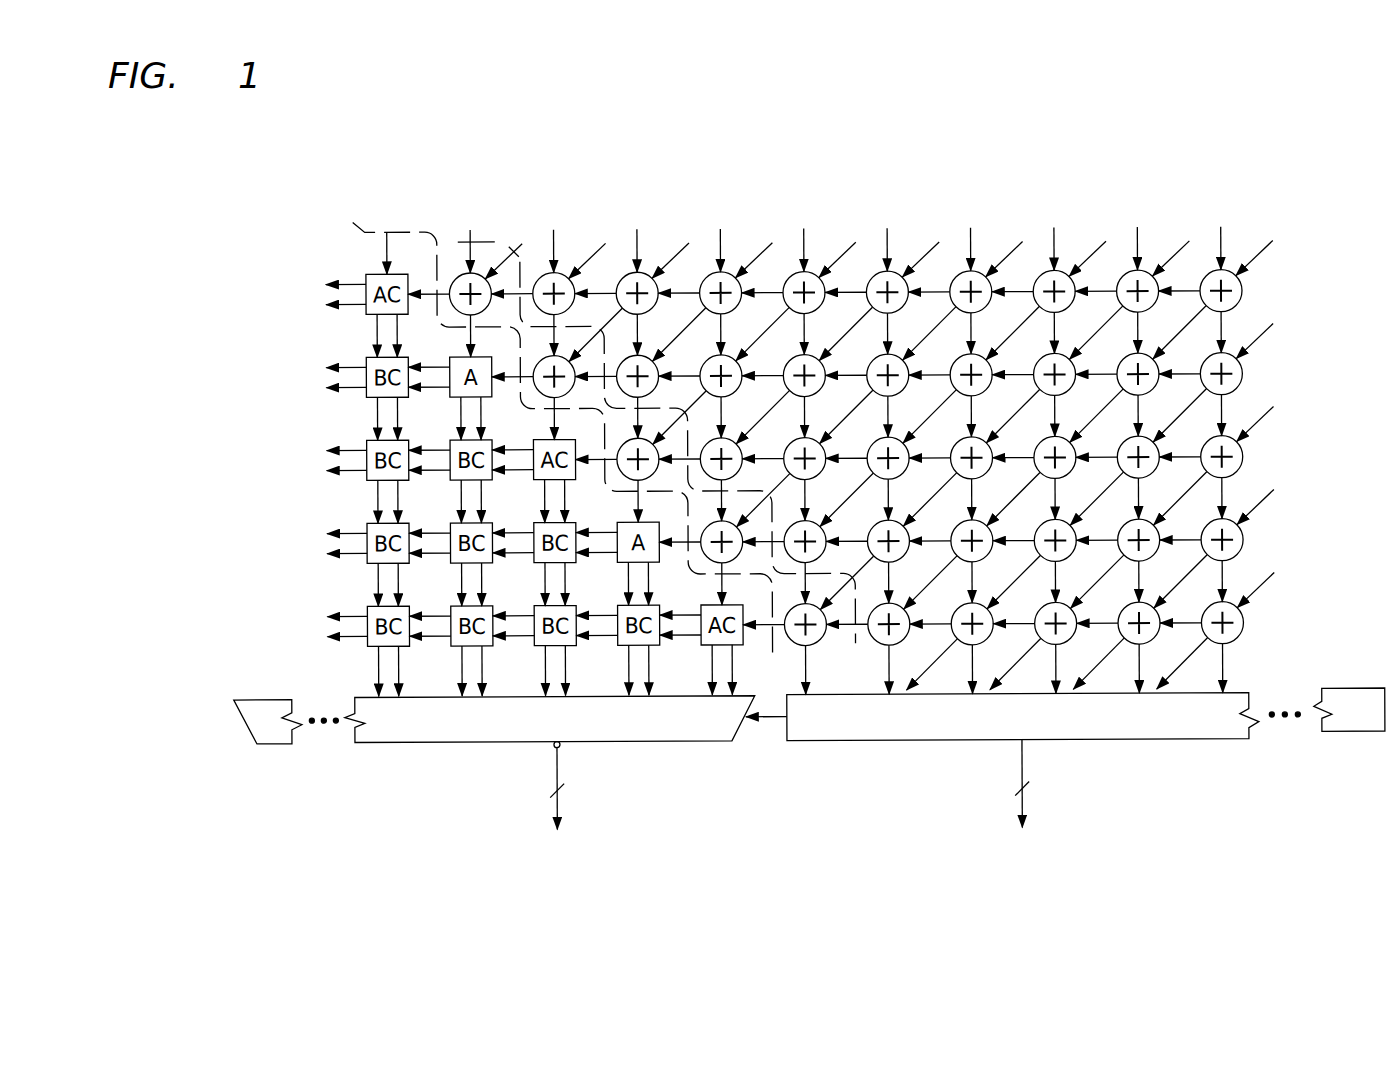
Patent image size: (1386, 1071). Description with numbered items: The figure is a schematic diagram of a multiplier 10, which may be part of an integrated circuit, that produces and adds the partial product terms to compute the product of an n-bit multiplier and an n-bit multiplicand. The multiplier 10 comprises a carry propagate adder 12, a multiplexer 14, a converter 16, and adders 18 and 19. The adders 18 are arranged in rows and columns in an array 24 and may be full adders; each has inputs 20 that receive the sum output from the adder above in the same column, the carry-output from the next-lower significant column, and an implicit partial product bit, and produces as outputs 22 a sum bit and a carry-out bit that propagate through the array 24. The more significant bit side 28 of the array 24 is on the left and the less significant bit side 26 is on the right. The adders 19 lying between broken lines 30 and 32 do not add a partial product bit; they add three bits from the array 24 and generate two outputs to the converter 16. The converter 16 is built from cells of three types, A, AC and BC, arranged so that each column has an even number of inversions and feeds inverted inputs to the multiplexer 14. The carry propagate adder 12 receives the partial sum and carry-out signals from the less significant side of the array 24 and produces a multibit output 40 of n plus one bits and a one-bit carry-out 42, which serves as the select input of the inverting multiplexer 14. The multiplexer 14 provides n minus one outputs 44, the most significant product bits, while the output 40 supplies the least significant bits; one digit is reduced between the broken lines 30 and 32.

The multiplier 10 is at (436, 828).
The carry propagate adder 12 is at (1206, 746).
The multiplexer 14 is at (672, 746).
The converter 16 is at (219, 240).
The adders 18 is at (647, 358).
The adders 19 is at (457, 278).
The inputs 20 is at (768, 353).
The outputs 22 is at (692, 413).
The array 24 is at (1341, 668).
The less significant bit side 26 is at (1100, 237).
The more significant bit side 28 is at (515, 231).
The broken line 30 is at (405, 231).
The broken line 32 is at (588, 330).
The multibit output 40 is at (1018, 770).
The carry-out 42 is at (767, 724).
The outputs 44 is at (552, 762).